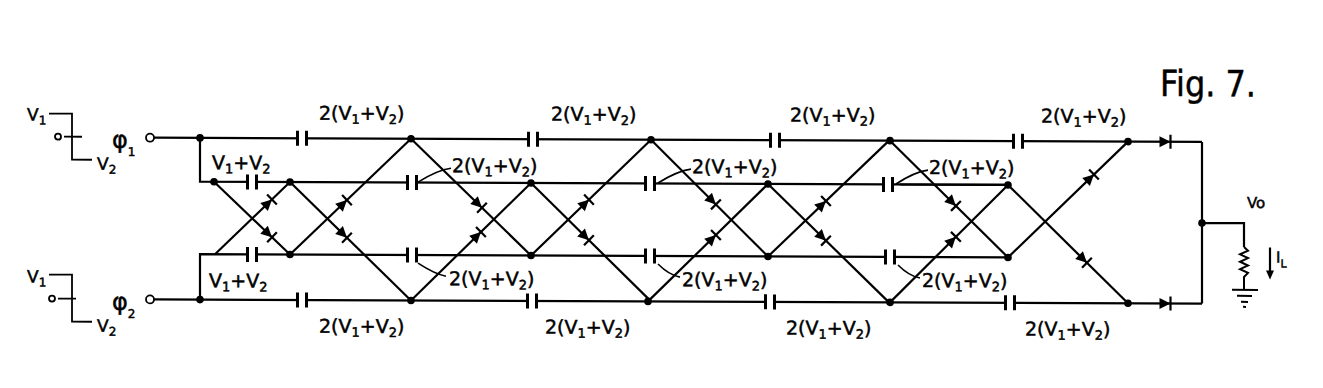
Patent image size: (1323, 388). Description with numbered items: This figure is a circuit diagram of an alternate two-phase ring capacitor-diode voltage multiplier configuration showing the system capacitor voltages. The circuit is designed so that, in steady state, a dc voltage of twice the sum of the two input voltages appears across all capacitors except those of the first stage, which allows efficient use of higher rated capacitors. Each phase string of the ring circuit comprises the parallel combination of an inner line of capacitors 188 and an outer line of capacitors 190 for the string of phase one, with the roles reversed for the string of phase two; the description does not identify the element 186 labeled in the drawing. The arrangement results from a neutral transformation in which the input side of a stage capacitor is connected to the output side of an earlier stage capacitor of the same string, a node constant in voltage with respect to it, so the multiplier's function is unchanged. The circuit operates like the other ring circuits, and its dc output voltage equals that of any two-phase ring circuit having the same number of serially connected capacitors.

The outer line of capacitors 190 is at (928, 137).
The inner line of capacitors 188 is at (1012, 182).
The output diode 186 is at (1165, 304).